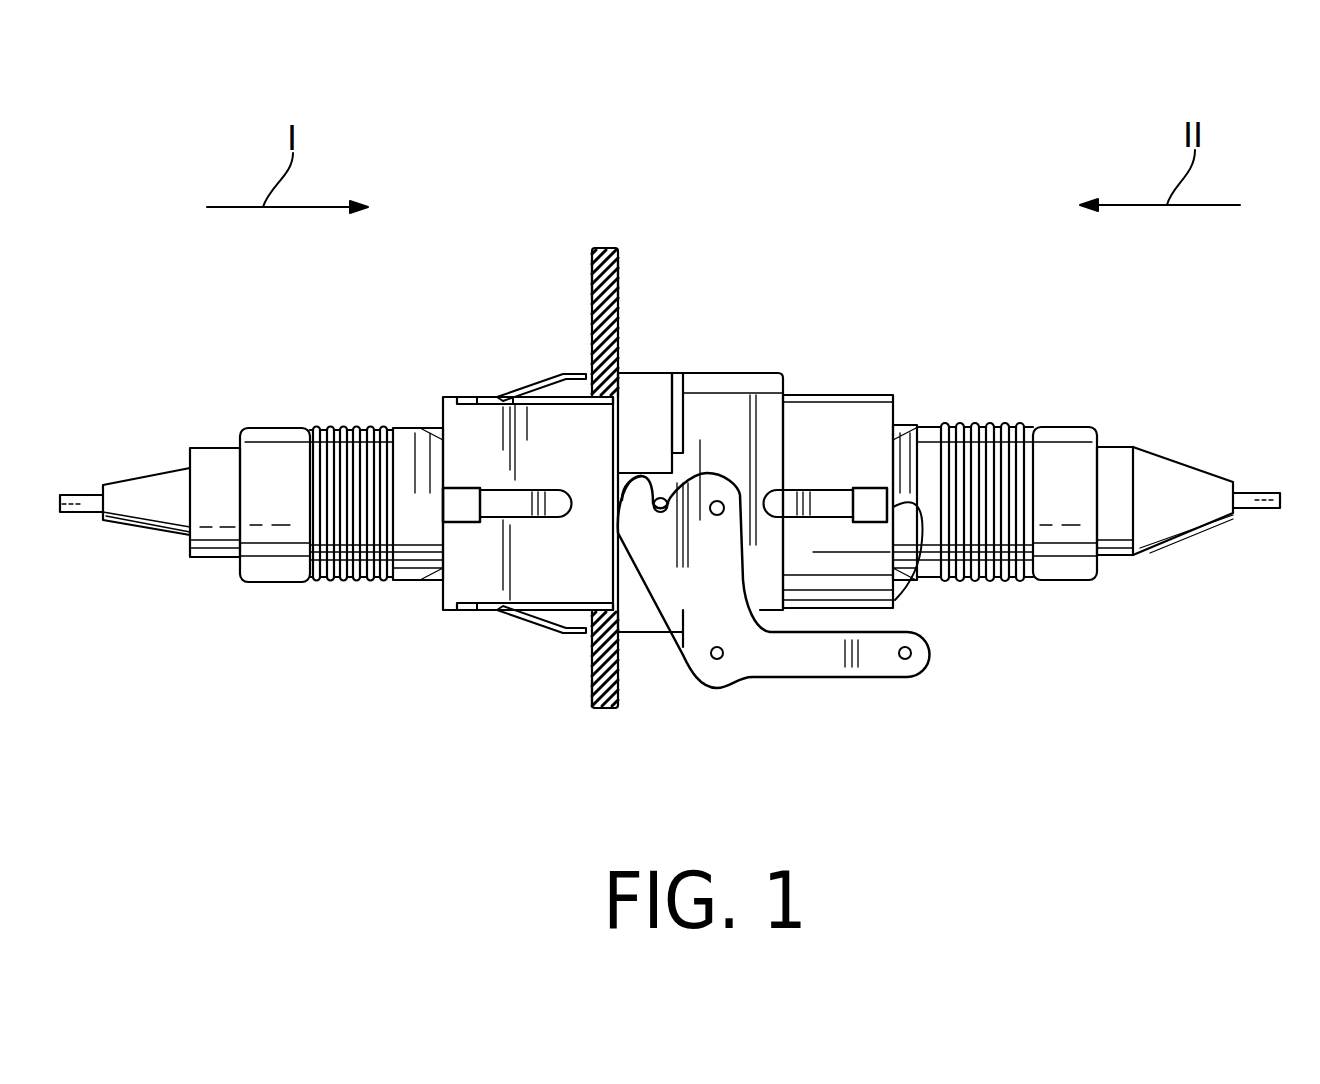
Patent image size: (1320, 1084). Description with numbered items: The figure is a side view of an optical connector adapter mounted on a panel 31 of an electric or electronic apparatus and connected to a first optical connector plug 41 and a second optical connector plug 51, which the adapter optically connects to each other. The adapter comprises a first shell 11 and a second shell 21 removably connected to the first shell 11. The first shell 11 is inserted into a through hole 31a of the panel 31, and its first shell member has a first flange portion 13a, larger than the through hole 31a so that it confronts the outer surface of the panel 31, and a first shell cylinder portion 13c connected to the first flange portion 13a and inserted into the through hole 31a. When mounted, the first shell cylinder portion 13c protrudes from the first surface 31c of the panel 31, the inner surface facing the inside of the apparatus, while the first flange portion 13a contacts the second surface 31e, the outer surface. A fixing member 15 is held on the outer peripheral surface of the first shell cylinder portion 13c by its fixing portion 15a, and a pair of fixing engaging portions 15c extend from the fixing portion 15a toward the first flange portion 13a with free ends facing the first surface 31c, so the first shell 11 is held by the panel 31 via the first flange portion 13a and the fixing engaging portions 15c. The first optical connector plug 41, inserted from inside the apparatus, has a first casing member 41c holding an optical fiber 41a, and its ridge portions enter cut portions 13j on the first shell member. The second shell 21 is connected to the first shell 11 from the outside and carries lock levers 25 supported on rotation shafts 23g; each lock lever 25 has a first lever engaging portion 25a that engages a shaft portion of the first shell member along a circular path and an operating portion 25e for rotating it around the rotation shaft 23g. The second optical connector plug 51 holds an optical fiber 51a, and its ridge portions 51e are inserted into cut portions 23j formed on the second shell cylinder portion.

The first shell 11 is at (670, 363).
The first flange portion 13a is at (637, 617).
The first shell cylinder portion 13c is at (450, 395).
The cut portions 13j is at (443, 500).
The fixing member 15 is at (477, 397).
The fixing portion 15a is at (513, 395).
The fixing engaging portions 15c is at (552, 377).
The second shell 21 is at (847, 395).
The rotation shafts 23g is at (720, 500).
The cut portions 23j is at (923, 578).
The lock levers 25 is at (774, 526).
The first lever engaging portion 25a is at (641, 476).
The operating portion 25e is at (865, 677).
The panel 31 is at (602, 247).
The through hole 31a is at (585, 673).
The first surface 31c is at (590, 275).
The second surface 31e is at (618, 278).
The first optical connector plug 41 is at (251, 462).
The optical fiber 41a is at (87, 512).
The first casing member 41c is at (500, 523).
The second optical connector plug 51 is at (1095, 467).
The optical fiber 51a is at (1253, 510).
The ridge portions 51e is at (832, 497).